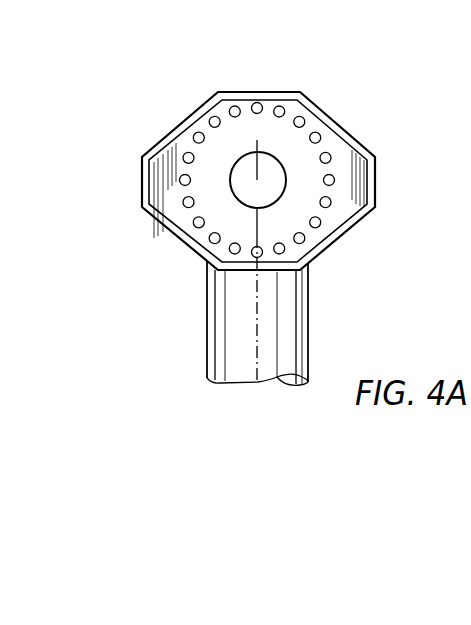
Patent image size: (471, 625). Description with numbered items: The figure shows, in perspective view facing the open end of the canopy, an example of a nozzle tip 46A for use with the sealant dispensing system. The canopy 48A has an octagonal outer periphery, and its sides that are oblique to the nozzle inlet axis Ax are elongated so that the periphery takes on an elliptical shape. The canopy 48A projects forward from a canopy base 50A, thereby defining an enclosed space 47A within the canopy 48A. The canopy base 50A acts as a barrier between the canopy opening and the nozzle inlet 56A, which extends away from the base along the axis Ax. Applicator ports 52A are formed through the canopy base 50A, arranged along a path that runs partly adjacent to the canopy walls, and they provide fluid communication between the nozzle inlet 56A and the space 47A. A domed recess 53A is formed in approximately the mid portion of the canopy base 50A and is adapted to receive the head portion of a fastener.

The nozzle tip 46A is at (345, 106).
The enclosed space 47A is at (269, 126).
The canopy 48A is at (365, 145).
The canopy base 50A is at (160, 175).
The applicator ports 52A is at (213, 117).
The domed recess 53A is at (242, 187).
The nozzle inlet 56A is at (207, 345).
The nozzle inlet axis Ax is at (257, 329).